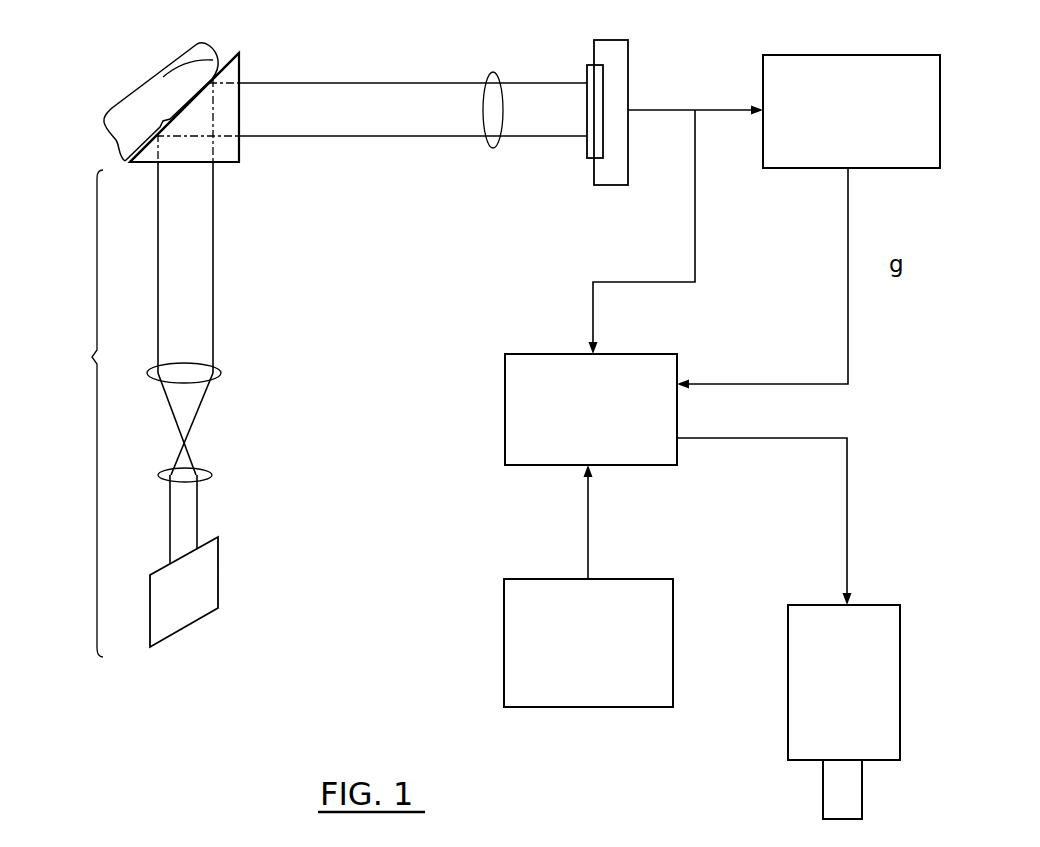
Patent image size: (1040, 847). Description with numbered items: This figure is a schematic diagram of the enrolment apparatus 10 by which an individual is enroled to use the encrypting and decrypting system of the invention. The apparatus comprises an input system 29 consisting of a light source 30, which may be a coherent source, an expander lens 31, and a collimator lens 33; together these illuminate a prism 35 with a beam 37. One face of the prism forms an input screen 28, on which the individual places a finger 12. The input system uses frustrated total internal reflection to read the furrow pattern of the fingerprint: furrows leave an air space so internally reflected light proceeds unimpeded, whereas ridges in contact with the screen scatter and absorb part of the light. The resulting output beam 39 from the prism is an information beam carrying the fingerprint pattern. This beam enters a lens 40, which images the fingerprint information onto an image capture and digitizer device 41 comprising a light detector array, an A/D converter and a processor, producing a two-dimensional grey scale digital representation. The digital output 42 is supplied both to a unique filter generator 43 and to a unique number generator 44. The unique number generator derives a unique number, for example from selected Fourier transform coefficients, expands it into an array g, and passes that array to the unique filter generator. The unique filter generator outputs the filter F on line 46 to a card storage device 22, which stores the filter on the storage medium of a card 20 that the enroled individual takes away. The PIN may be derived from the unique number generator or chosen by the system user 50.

The enrolment apparatus 10 is at (523, 55).
The finger 12 is at (127, 82).
The card 20 is at (862, 808).
The card storage device 22 is at (900, 685).
The input screen 28 is at (250, 53).
The input system 29 is at (82, 413).
The light source 30 is at (218, 570).
The expander lens 31 is at (213, 478).
The collimator lens 33 is at (222, 375).
The prism 35 is at (250, 161).
The beam 37 is at (213, 263).
The output beam 39 is at (400, 137).
The lens 40 is at (494, 148).
The image capture and digitizer device 41 is at (620, 187).
The digital output 42 is at (675, 108).
The unique filter generator 43 is at (677, 358).
The unique number generator 44 is at (940, 133).
The line 46 is at (727, 440).
The system user 50 is at (504, 614).